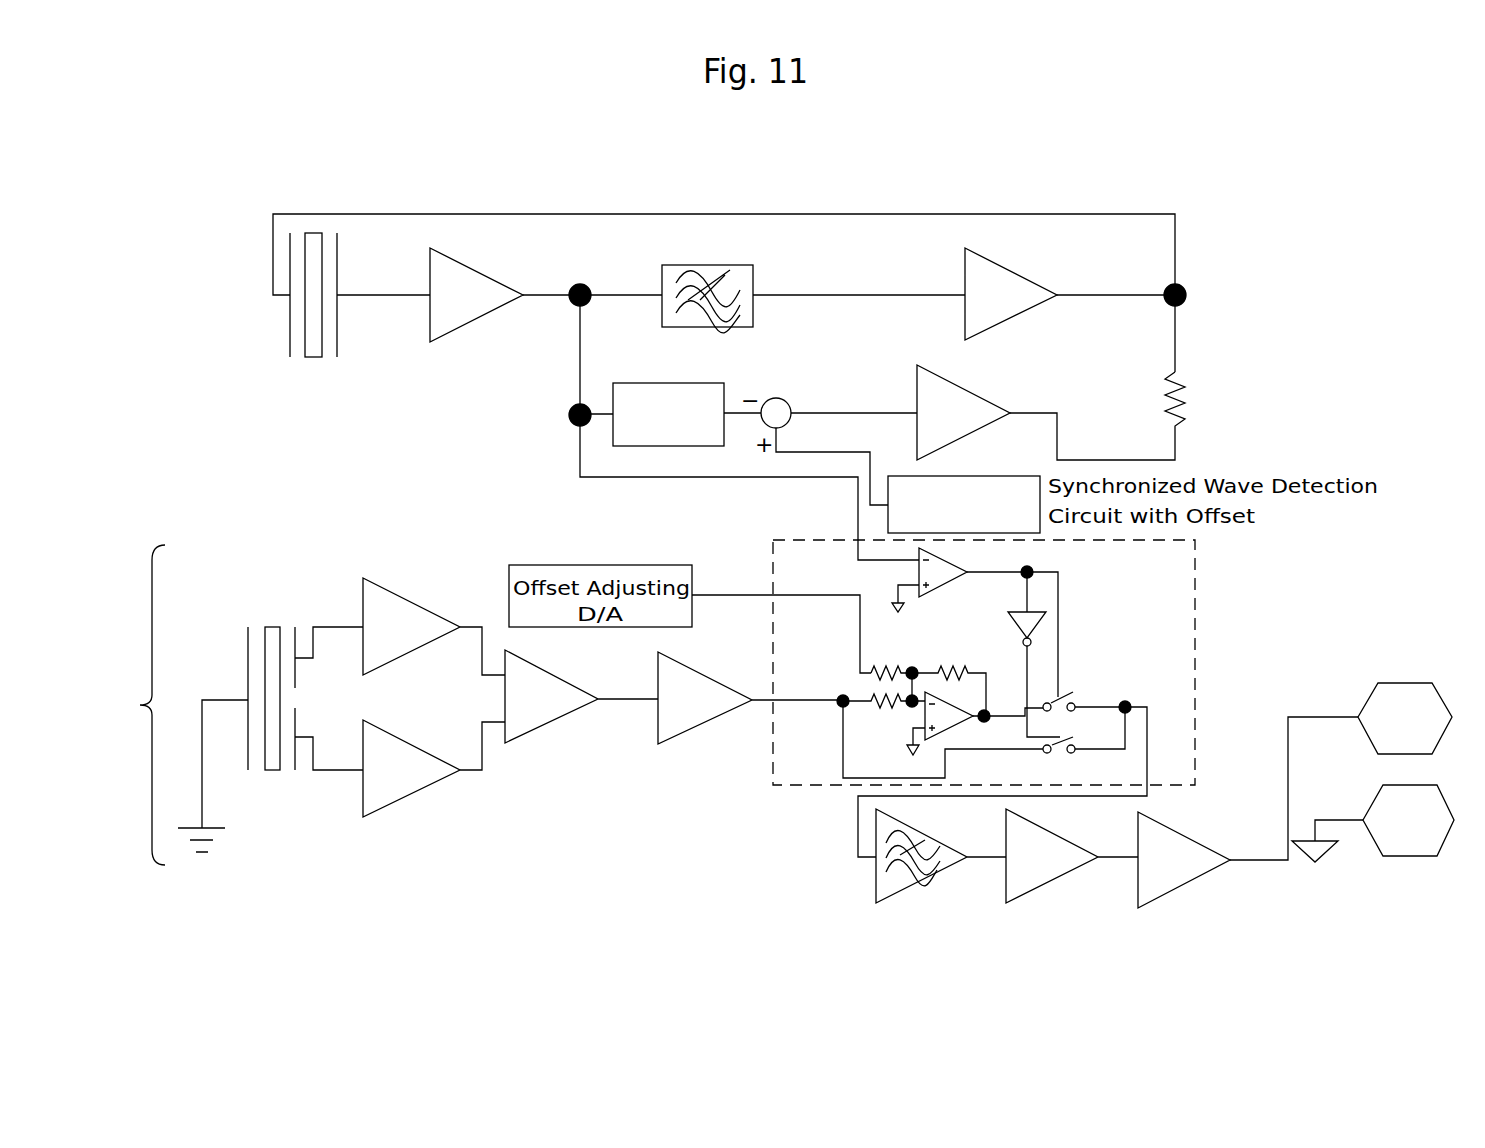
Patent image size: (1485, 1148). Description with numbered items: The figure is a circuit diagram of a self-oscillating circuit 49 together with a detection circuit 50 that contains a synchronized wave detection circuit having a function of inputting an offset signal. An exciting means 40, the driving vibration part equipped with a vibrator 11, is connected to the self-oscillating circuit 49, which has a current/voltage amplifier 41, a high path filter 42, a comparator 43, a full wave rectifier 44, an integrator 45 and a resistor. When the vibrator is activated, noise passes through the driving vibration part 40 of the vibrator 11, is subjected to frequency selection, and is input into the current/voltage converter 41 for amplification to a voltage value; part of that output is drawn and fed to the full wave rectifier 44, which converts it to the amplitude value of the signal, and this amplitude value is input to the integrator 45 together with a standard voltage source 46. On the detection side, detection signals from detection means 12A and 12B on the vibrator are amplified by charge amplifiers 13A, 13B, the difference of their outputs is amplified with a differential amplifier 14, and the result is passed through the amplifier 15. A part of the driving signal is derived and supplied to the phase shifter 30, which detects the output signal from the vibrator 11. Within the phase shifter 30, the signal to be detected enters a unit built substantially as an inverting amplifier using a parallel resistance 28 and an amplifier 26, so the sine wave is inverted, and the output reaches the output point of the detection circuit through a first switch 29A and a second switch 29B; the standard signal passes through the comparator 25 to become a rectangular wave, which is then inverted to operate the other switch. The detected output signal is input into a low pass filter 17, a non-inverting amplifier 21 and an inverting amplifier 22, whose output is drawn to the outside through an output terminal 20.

The vibrator 11 is at (313, 240).
The detection means 12A is at (303, 640).
The detection means 12B is at (297, 760).
The charge amplifier 13A is at (370, 592).
The charge amplifier 13B is at (370, 793).
The differential amplifier 14 is at (520, 728).
The amplifier 15 is at (673, 720).
The low pass filter 17 is at (897, 873).
The output terminal 20 is at (1408, 690).
The non-inverting amplifier 21 is at (1057, 913).
The inverting amplifier 22 is at (1160, 883).
The comparator 25 is at (952, 575).
The amplifier 26 is at (938, 742).
The parallel resistance 28 is at (888, 668).
The switch 29A is at (1065, 692).
The switch 29B is at (1060, 752).
The phase shifter 30 is at (1196, 614).
The exciting means 40 is at (338, 258).
The current/voltage amplifier 41 is at (495, 246).
The high path filter 42 is at (745, 287).
The comparator 43 is at (1055, 256).
The full wave rectifier 44 is at (695, 385).
The integrator 45 is at (1002, 376).
The standard voltage source 46 is at (1005, 478).
The self-oscillating circuit 49 is at (1258, 210).
The detection circuit 50 is at (183, 705).